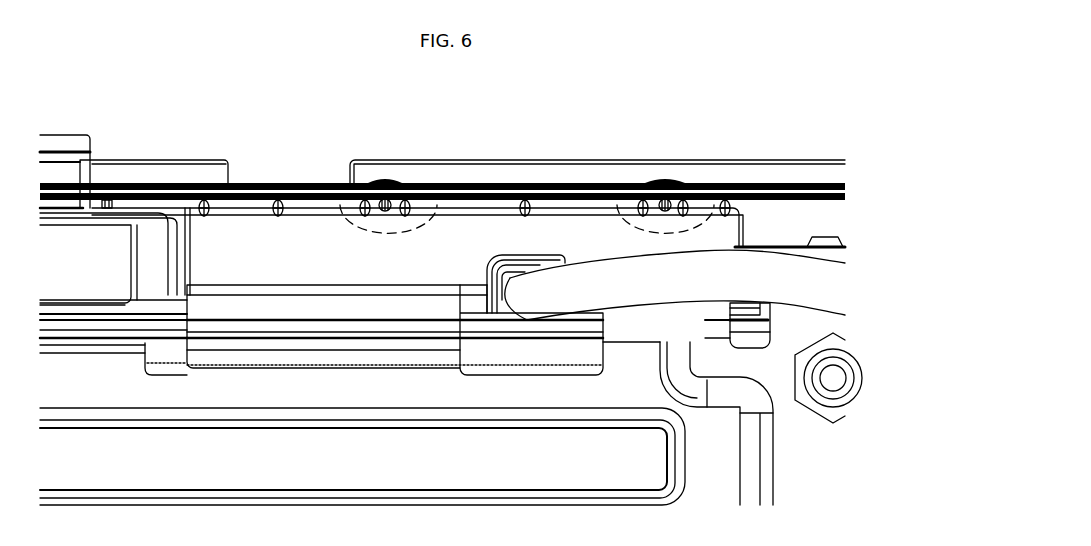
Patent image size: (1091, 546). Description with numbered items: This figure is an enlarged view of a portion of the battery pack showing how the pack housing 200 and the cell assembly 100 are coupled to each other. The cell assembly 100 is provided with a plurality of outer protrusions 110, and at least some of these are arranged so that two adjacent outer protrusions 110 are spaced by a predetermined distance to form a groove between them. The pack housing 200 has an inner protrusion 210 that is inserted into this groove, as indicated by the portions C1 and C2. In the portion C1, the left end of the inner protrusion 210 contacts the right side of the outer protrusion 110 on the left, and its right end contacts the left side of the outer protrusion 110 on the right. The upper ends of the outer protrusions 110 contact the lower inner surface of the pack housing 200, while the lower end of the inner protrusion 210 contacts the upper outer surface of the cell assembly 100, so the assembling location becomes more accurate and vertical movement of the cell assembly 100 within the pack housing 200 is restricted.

The cell assembly 100 is at (485, 236).
The outer protrusion 110 is at (360, 185).
The pack housing 200 is at (762, 190).
The inner protrusion 210 is at (386, 180).
The coupling portion C1 is at (621, 227).
The coupling portion C2 is at (343, 227).